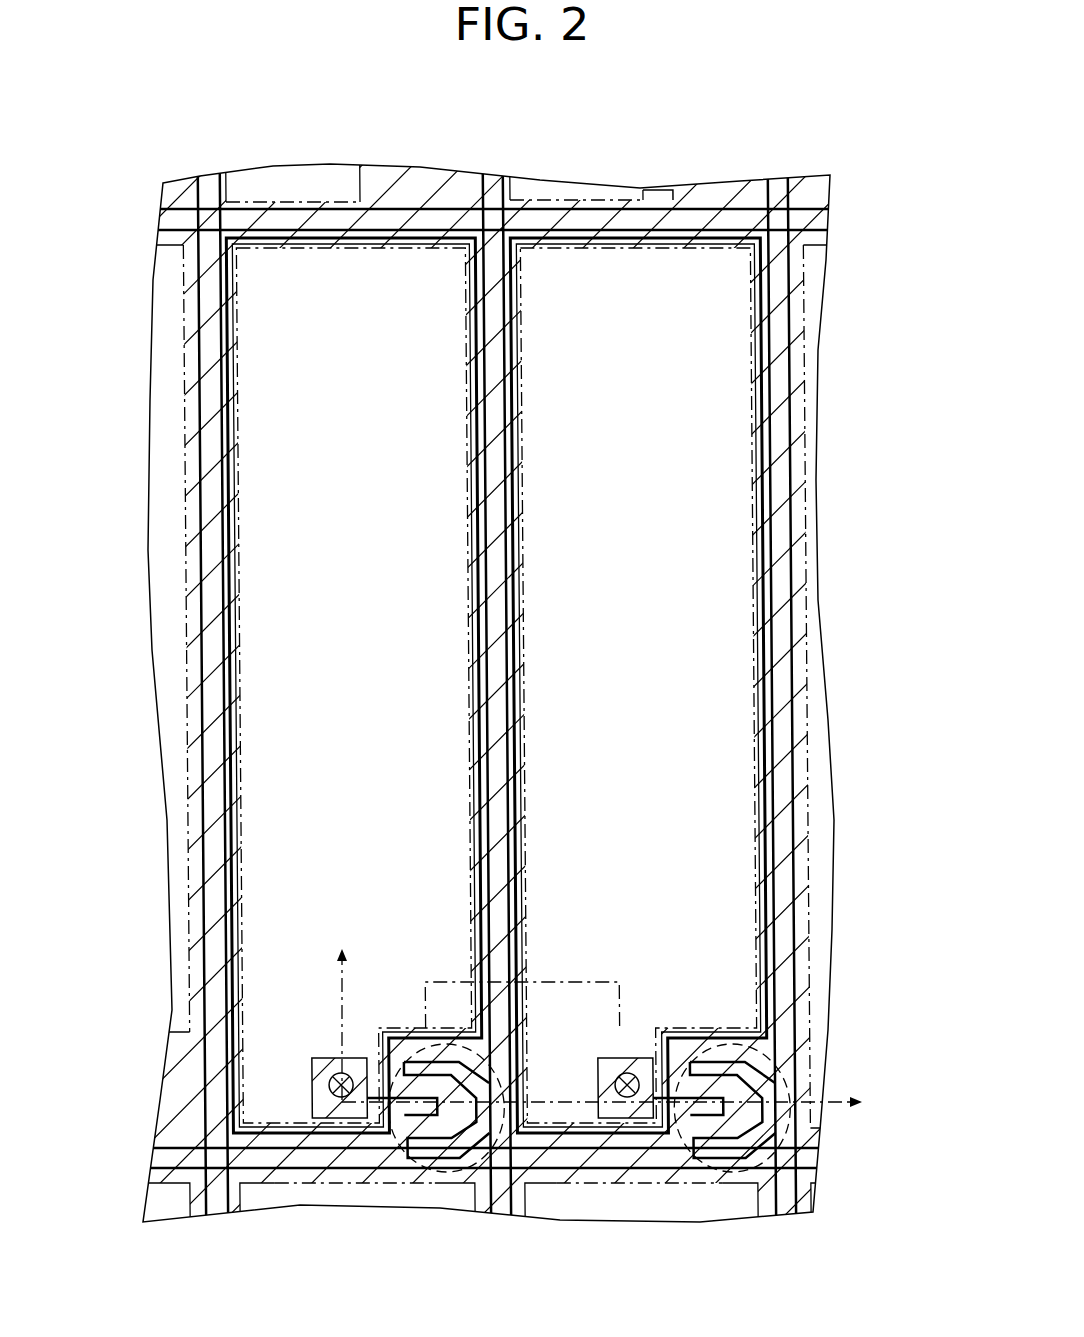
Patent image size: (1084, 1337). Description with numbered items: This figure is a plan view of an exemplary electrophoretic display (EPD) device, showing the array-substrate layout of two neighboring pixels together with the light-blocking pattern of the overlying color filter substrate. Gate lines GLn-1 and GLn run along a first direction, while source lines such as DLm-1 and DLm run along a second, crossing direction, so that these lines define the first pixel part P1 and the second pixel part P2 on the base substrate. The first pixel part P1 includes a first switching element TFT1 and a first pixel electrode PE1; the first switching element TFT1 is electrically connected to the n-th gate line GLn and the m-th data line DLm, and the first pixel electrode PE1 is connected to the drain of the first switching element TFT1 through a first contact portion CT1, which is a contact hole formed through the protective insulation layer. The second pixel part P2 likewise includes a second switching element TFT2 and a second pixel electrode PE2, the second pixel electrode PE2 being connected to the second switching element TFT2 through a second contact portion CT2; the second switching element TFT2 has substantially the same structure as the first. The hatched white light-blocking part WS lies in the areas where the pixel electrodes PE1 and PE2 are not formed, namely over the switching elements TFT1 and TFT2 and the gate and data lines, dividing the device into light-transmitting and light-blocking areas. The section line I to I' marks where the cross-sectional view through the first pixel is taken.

The white light-blocking part WS is at (663, 196).
The gate line GLn-1 is at (823, 219).
The n-th gate line GLn is at (826, 1158).
The source line DLm-1 is at (211, 1214).
The m-th data line DLm is at (500, 1213).
The first pixel electrode PE1 is at (232, 722).
The second pixel electrode PE2 is at (767, 706).
The first pixel part P1 is at (366, 593).
The second pixel part P2 is at (651, 593).
The first contact portion CT1 is at (337, 1098).
The second contact portion CT2 is at (621, 1097).
The first switching element TFT1 is at (443, 1177).
The second switching element TFT2 is at (727, 1178).
The section line I is at (342, 1011).
The section line I' is at (615, 1103).